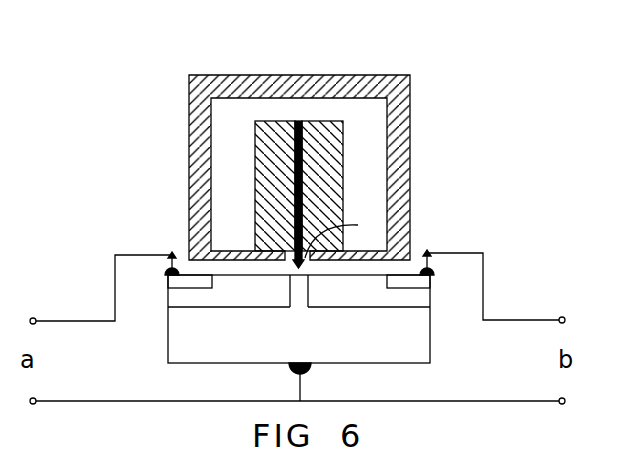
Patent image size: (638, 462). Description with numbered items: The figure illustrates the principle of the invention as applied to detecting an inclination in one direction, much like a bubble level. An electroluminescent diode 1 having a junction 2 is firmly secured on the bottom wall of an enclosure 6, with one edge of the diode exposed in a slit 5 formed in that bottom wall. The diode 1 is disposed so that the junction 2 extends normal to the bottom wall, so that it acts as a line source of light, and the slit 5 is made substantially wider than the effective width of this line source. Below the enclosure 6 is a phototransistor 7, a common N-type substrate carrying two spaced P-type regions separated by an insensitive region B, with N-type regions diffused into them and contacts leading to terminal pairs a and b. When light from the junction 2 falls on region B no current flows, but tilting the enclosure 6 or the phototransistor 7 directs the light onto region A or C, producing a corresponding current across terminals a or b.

The electroluminescent diode 1 is at (343, 190).
The junction 2 is at (302, 178).
The slit 5 is at (341, 231).
The enclosure 6 is at (410, 118).
The phototransistor 7 is at (430, 333).